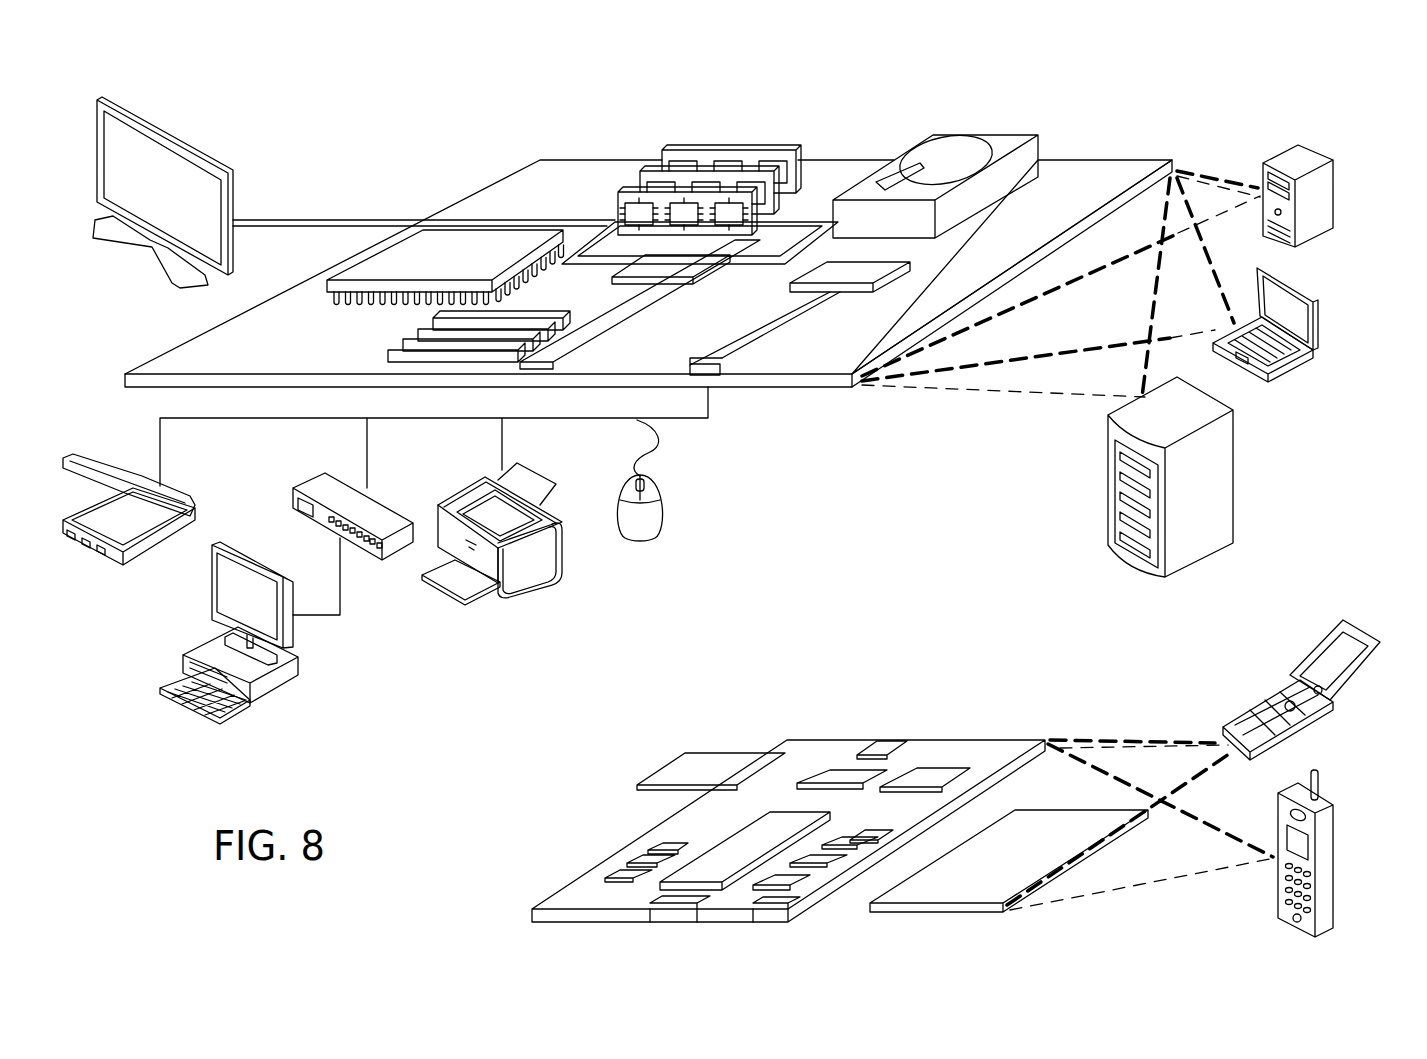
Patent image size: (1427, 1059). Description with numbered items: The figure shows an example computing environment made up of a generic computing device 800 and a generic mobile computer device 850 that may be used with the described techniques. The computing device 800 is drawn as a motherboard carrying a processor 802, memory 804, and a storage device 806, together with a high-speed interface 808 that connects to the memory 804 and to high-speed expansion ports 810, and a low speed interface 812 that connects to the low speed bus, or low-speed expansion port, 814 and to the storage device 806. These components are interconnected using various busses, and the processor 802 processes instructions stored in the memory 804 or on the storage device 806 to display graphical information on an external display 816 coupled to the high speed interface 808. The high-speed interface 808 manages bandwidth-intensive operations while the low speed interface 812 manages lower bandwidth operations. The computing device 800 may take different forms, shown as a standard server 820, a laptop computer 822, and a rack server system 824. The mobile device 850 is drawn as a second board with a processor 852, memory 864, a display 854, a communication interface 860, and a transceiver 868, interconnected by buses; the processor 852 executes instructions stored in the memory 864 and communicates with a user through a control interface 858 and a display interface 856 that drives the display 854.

The computing device 800 is at (522, 113).
The processor 802 is at (372, 268).
The memory 804 is at (733, 149).
The storage device 806 is at (1003, 146).
The high-speed interface 808 is at (693, 270).
The high-speed expansion ports 810 is at (418, 333).
The low speed interface 812 is at (832, 272).
The low-speed expansion port 814 is at (733, 368).
The display 816 is at (167, 136).
The standard server 820 is at (1336, 188).
The laptop computer 822 is at (1320, 325).
The rack server system 824 is at (1235, 473).
The mobile computer device 850 is at (733, 702).
The processor 852 is at (745, 842).
The display 854 is at (962, 897).
The display interface 856 is at (778, 887).
The control interface 858 is at (822, 862).
The communication interface 860 is at (862, 838).
The memory 864 is at (650, 856).
The transceiver 868 is at (927, 779).